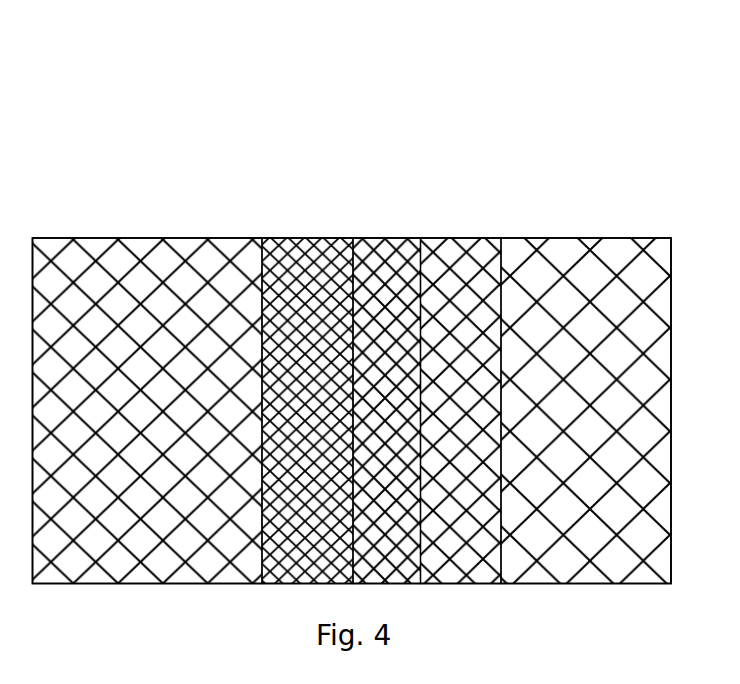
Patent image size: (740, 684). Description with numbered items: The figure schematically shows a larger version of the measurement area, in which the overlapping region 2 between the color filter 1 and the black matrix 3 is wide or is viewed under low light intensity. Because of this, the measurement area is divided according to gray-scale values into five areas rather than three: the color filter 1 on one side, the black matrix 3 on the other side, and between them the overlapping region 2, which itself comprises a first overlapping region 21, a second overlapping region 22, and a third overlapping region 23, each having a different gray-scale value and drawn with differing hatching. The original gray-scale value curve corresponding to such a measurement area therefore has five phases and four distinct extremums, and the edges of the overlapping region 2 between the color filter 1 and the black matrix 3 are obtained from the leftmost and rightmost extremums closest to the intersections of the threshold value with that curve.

The color filter 1 is at (577, 258).
The overlapping region 2 is at (381, 306).
The first overlapping region 21 is at (310, 254).
The second overlapping region 22 is at (380, 251).
The third overlapping region 23 is at (461, 336).
The black matrix 3 is at (193, 257).